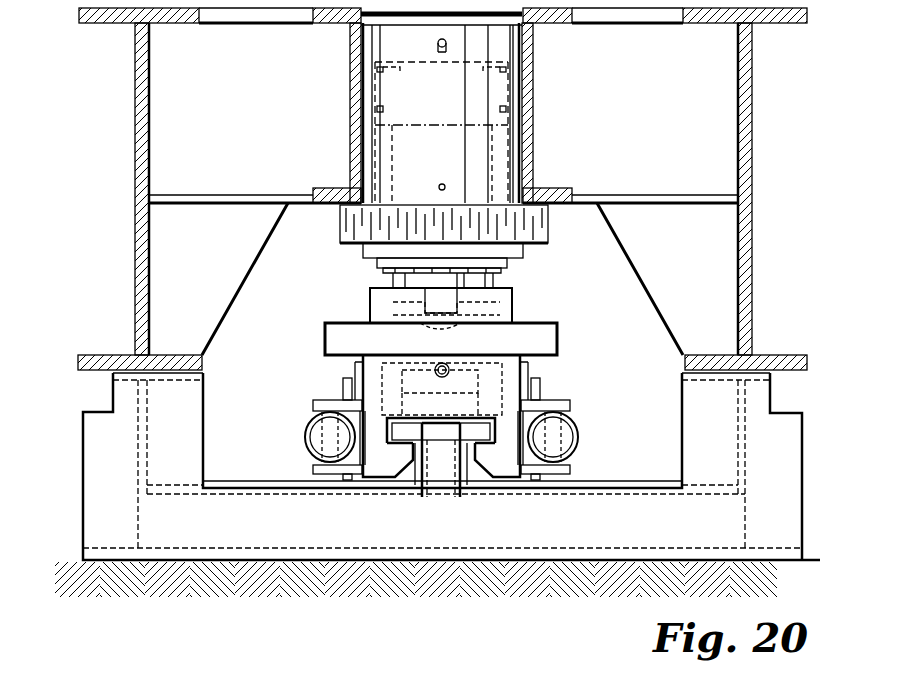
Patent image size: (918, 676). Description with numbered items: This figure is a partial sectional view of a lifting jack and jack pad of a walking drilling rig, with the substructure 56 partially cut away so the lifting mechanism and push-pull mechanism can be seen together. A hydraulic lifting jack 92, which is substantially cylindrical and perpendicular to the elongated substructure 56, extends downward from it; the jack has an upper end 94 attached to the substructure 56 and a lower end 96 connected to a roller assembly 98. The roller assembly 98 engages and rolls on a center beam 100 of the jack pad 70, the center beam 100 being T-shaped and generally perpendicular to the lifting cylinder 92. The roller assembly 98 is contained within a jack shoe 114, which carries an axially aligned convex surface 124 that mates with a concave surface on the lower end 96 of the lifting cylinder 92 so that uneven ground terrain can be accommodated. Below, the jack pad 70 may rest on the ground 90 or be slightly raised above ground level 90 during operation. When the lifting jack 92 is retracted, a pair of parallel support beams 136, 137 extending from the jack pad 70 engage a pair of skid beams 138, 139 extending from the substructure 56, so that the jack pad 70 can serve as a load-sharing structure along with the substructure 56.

The substructure 56 is at (138, 110).
The upper end 94 is at (493, 50).
The hydraulic lifting jack 92 is at (480, 170).
The skid beam 138 is at (140, 290).
The skid beam 139 is at (752, 285).
The lower end 96 is at (496, 281).
The convex surface 124 is at (460, 335).
The roller assembly 98 is at (415, 393).
The jack shoe 114 is at (508, 388).
The center beam 100 is at (478, 432).
The jack pad 70 is at (805, 447).
The support beam 136 is at (97, 478).
The support beam 137 is at (775, 502).
The ground 90 is at (745, 577).